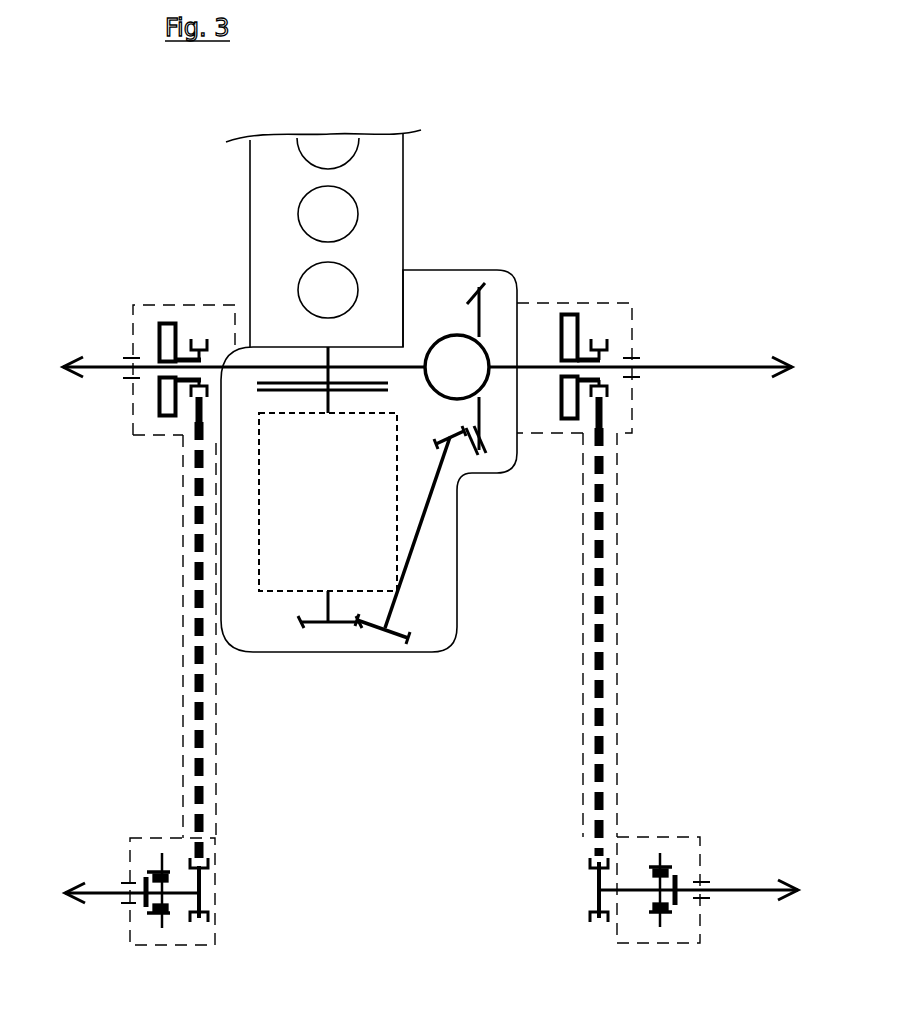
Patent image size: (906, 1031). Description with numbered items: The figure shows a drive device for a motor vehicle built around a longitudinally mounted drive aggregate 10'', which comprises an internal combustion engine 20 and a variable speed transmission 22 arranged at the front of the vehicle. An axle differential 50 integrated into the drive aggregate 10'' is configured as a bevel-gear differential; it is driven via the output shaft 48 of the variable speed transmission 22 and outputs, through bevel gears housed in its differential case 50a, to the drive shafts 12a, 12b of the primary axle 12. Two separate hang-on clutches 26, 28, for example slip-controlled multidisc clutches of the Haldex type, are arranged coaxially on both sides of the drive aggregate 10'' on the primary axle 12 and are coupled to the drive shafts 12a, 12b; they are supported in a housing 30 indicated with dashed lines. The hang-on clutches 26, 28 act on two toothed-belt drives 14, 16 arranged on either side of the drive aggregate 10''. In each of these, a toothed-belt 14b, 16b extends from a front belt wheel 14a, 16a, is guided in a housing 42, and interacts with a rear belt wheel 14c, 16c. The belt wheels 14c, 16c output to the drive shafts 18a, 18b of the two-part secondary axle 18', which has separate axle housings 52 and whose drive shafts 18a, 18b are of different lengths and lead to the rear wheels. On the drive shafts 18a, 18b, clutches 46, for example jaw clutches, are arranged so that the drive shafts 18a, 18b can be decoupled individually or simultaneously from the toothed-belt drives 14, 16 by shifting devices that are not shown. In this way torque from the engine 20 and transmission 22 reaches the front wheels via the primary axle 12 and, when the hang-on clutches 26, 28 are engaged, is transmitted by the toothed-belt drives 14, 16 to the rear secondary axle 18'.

The drive aggregate 10'' is at (400, 400).
The primary axle 12 is at (427, 373).
The drive shaft 12a is at (108, 366).
The drive shaft 12b is at (707, 370).
The toothed-belt drive 14 is at (186, 671).
The belt wheel 14a is at (205, 338).
The toothed-belt 14b is at (195, 537).
The belt wheel 14c is at (204, 918).
The toothed-belt drive 16 is at (621, 693).
The belt wheel 16a is at (600, 332).
The toothed-belt 16b is at (600, 535).
The belt wheel 16c is at (592, 922).
The two-part secondary axle 18' is at (418, 848).
The drive shaft 18a is at (118, 898).
The drive shaft 18b is at (742, 893).
The internal combustion engine 20 is at (364, 173).
The variable speed transmission 22 is at (314, 520).
The hang-on clutch 26 is at (145, 298).
The hang-on clutch 28 is at (583, 308).
The housing 30 is at (622, 300).
The housing 42 is at (217, 673).
The clutch 46 is at (169, 924).
The output shaft 48 is at (420, 547).
The axle differential 50 is at (447, 325).
The differential case 50a is at (430, 390).
The axle housing 52 is at (165, 952).